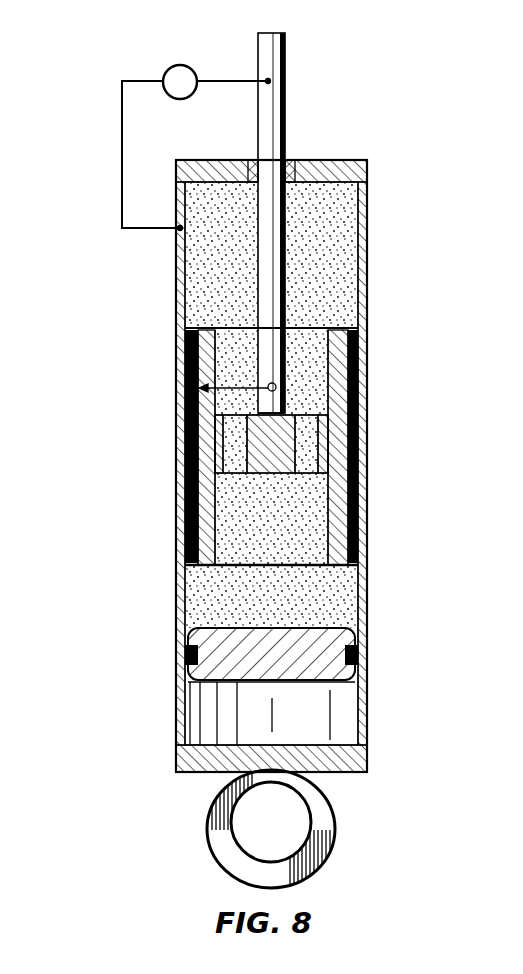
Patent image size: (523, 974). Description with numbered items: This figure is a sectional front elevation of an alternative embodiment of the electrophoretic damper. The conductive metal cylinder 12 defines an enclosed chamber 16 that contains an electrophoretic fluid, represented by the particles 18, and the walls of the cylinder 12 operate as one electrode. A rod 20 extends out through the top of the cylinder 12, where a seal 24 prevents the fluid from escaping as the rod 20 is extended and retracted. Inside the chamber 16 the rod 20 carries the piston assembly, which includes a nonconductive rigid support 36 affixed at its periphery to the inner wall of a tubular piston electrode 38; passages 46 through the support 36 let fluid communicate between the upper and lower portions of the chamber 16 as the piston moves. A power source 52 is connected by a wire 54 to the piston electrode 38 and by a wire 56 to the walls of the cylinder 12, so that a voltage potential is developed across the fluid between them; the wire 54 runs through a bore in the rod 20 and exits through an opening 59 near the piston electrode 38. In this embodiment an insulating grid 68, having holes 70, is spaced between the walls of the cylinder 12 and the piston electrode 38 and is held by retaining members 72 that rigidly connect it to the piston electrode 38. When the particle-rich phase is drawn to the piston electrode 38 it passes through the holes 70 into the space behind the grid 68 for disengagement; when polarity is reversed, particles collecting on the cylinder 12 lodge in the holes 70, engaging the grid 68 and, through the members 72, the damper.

The cylinder 12 is at (360, 206).
The chamber 16 is at (322, 253).
The particles 18 is at (198, 248).
The rod 20 is at (286, 65).
The seal 24 is at (290, 160).
The rigid support 36 is at (282, 472).
The tubular piston electrode 38 is at (334, 327).
The passages 46 is at (223, 413).
The power source 52 is at (180, 64).
The wire 54 is at (232, 80).
The wire 56 is at (122, 108).
The opening 59 is at (271, 383).
The insulating grid 68 is at (358, 355).
The holes 70 is at (205, 480).
The retaining members 72 is at (352, 330).